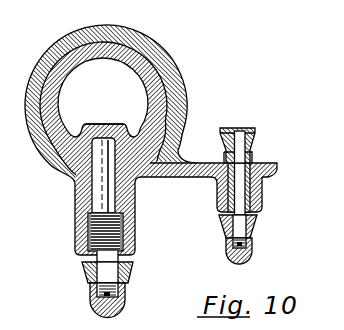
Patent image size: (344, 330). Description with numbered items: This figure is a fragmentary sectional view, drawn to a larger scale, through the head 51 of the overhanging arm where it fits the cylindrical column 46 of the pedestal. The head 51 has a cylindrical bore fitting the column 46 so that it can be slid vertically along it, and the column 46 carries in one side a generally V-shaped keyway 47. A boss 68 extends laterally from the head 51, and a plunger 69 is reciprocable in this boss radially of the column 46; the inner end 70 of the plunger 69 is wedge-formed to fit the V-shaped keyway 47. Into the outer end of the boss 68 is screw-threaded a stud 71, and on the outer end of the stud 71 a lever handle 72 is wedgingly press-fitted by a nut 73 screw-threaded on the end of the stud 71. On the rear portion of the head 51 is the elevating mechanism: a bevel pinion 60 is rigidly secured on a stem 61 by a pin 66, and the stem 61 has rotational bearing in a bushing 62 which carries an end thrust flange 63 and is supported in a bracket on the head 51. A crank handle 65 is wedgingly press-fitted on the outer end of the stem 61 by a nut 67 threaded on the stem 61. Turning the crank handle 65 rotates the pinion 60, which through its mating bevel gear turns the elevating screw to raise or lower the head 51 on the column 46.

The cylindrical column 46 is at (139, 78).
The V-shaped keyway 47 is at (81, 130).
The head 51 is at (184, 69).
The bevel pinion 60 is at (253, 146).
The stem 61 is at (240, 194).
The bushing 62 is at (278, 169).
The end thrust flange 63 is at (256, 160).
The crank handle 65 is at (258, 226).
The pin 66 is at (222, 158).
The nut 67 is at (249, 259).
The boss 68 is at (77, 208).
The plunger 69 is at (100, 188).
The wedge-formed inner end 70 is at (126, 127).
The stud 71 is at (124, 236).
The lever handle 72 is at (131, 273).
The nut 73 is at (120, 309).